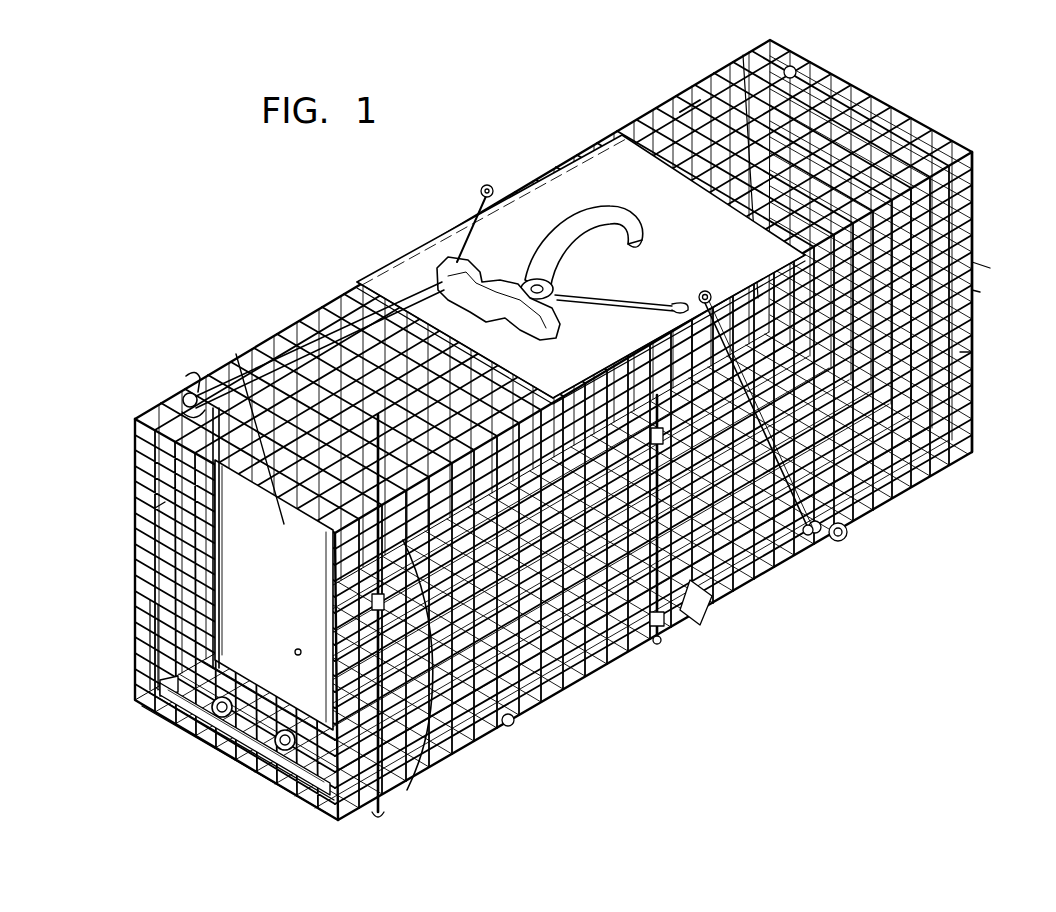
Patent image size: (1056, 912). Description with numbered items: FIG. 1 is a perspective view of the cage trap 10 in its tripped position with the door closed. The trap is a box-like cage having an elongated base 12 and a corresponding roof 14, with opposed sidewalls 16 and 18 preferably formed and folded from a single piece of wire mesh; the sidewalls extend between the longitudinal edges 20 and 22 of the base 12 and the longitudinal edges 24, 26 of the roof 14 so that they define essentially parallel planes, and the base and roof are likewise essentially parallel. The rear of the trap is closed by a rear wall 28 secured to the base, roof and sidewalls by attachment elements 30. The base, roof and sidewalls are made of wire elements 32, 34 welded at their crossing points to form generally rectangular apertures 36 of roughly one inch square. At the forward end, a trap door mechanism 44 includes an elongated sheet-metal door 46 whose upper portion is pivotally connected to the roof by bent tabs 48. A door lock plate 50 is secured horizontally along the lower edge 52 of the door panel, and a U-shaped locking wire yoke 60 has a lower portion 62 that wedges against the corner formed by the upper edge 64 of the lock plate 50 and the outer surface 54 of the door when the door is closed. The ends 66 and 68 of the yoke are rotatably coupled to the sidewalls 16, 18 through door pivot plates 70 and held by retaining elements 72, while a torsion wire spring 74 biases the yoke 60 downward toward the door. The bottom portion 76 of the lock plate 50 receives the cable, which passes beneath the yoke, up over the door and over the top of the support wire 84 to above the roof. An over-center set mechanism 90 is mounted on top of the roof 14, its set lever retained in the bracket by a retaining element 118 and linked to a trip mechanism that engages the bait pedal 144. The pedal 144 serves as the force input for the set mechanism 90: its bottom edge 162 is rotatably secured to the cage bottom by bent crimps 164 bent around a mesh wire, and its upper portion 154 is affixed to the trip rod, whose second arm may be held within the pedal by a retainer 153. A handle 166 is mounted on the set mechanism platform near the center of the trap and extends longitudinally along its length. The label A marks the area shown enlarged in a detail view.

The cage trap 10 is at (898, 592).
The base 12 is at (840, 524).
The roof 14 is at (700, 100).
The sidewall 16 is at (964, 404).
The sidewall 18 is at (135, 548).
The longitudinal edge of base 20 is at (744, 94).
The longitudinal edge of base 22 is at (134, 712).
The longitudinal edge of roof 24 is at (958, 160).
The longitudinal edge of roof 26 is at (656, 96).
The rear wall 28 is at (940, 187).
The attachment element 30 is at (796, 68).
The wire element 32 is at (990, 268).
The wire element 34 is at (980, 292).
The rectangular aperture 36 is at (962, 352).
The trap door mechanism 44 is at (201, 441).
The door 46 is at (257, 420).
The bent tab 48 is at (432, 346).
The door lock plate 50 is at (230, 750).
The lower edge of door panel 52 is at (248, 720).
The outer surface of door 54 is at (309, 590).
The locking wire yoke 60 is at (150, 602).
The lower portion of yoke 62 is at (250, 735).
The upper edge of door lock plate 64 is at (176, 684).
The end of yoke 66 is at (192, 372).
The end of yoke 68 is at (411, 772).
The door pivot plate 70 is at (436, 762).
The retaining element 72 is at (372, 420).
The torsion wire spring 74 is at (345, 470).
The bottom portion of door lock plate 76 is at (208, 710).
The support wire 84 is at (181, 396).
The over-center set mechanism 90 is at (445, 262).
The retaining element 118 is at (486, 184).
The bait pedal 144 is at (745, 585).
The retainer 153 is at (520, 245).
The upper portion of pedal 154 is at (788, 548).
The bottom edge of pedal 162 is at (682, 600).
The bent crimp 164 is at (702, 624).
The handle 166 is at (612, 141).
The door section A is at (282, 525).